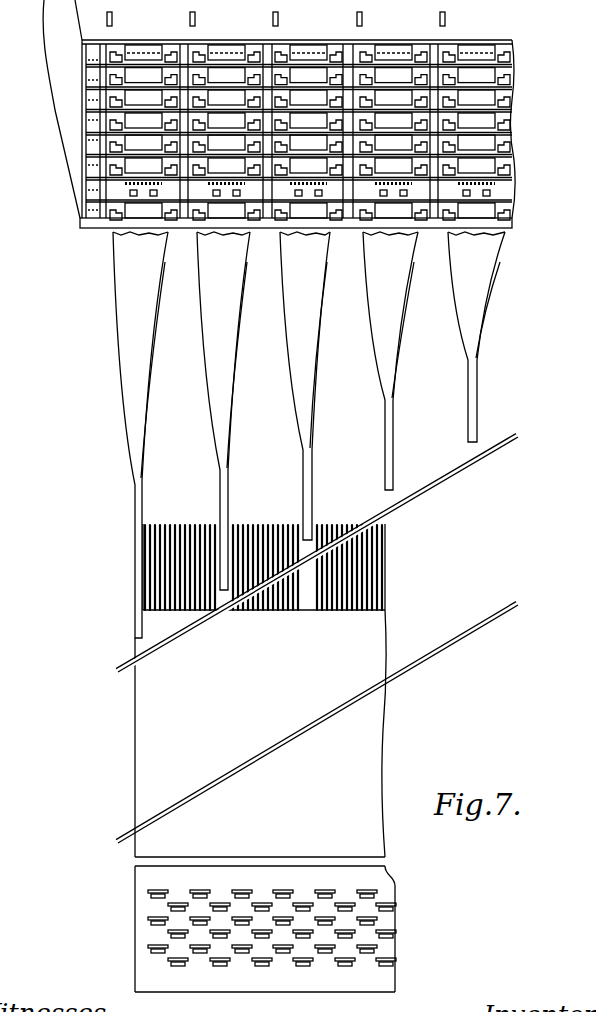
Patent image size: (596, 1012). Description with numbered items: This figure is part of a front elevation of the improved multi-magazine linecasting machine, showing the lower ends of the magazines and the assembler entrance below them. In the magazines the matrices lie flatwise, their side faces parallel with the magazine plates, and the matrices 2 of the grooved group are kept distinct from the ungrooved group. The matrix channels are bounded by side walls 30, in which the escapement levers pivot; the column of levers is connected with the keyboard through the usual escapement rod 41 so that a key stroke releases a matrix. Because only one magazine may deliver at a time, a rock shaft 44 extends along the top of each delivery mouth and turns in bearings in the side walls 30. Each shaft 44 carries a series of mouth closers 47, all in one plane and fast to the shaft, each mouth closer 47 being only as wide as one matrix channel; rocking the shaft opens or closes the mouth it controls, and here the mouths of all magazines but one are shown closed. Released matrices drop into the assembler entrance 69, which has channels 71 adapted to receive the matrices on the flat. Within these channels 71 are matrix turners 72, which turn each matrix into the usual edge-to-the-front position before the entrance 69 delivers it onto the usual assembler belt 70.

The matrices of the other group 2 is at (123, 205).
The side wall 30 is at (184, 50).
The escapement rod 41 is at (386, 566).
The rock shaft 44 is at (95, 69).
The mouth closer 47 is at (145, 52).
The assembler entrance 69 is at (265, 713).
The assembler belt 70 is at (450, 474).
The channels 71 is at (309, 435).
The matrix turners 72 is at (152, 430).